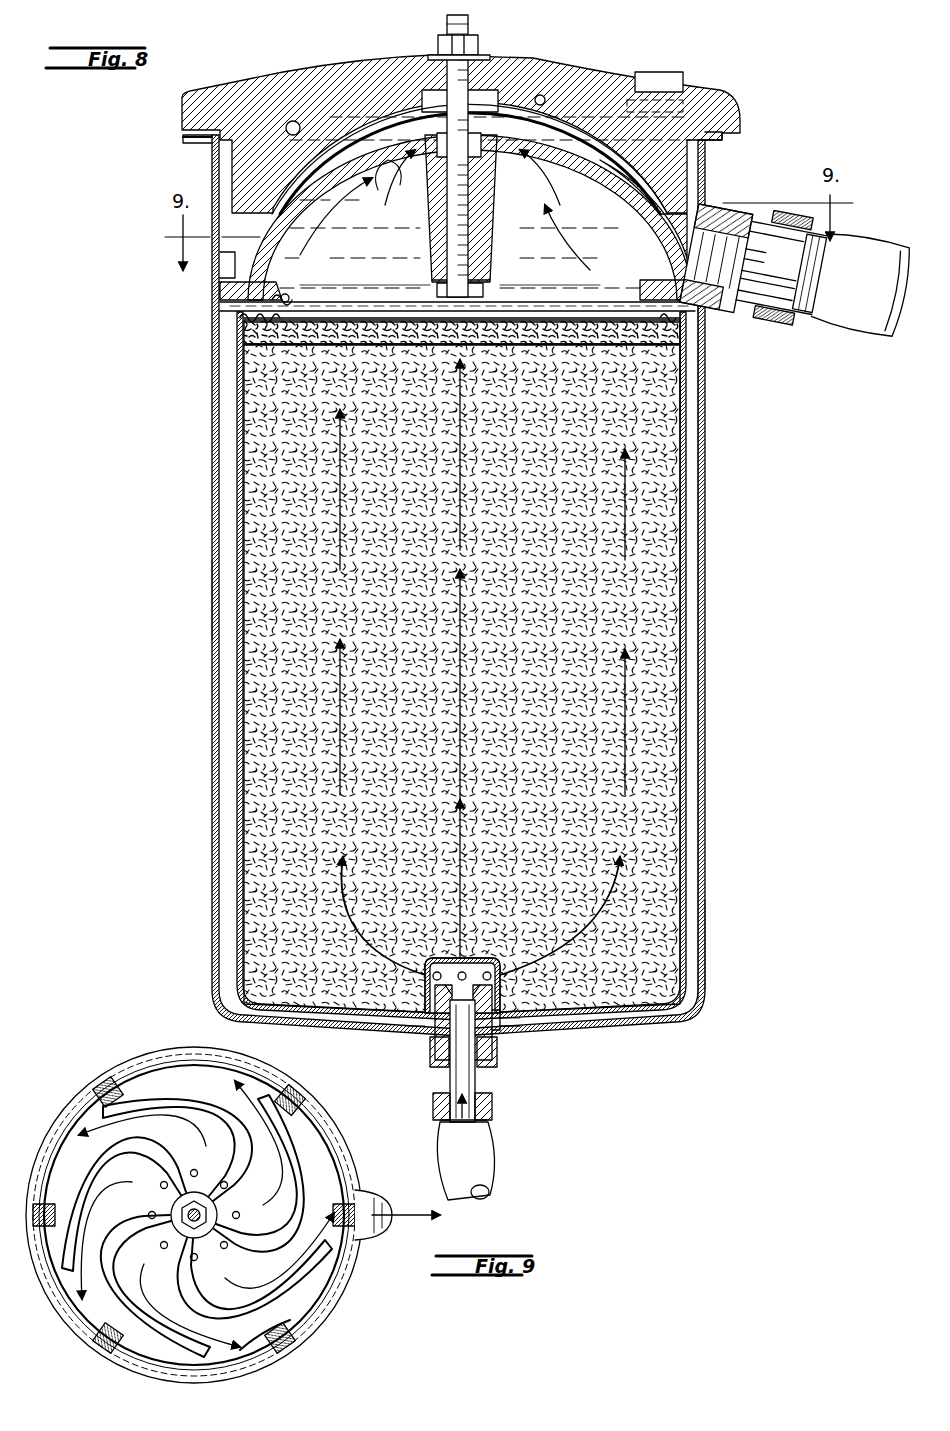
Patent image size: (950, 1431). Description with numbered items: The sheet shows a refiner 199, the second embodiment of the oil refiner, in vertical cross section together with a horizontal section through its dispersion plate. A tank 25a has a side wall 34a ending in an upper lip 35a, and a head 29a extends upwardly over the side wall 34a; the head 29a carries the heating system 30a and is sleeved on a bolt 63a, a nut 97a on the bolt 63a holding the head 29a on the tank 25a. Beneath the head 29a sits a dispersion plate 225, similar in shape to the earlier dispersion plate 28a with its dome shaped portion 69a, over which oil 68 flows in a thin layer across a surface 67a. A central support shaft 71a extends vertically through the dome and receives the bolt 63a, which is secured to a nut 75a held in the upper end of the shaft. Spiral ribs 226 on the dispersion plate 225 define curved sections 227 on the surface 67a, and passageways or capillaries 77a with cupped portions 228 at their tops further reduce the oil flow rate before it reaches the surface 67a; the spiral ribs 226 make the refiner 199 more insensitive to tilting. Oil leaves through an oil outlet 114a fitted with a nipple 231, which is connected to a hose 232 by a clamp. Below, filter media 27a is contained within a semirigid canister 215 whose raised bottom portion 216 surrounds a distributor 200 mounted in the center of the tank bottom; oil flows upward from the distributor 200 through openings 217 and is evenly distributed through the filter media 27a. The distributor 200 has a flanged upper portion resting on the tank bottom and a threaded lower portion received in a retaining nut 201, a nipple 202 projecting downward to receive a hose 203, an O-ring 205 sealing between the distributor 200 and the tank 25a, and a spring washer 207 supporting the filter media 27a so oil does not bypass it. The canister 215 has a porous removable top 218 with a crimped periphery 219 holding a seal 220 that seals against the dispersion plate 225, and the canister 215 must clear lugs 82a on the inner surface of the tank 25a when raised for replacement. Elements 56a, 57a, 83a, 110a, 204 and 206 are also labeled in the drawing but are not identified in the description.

In FIG. 8, the tank 25a is at (706, 660).
In FIG. 8, the filter media 27a is at (681, 528).
In FIG. 8, the dispersion plate 28a is at (588, 198).
In FIG. 8, the tank head 29a is at (300, 90).
In FIG. 8, the heating system 30a is at (663, 88).
In FIG. 8, the tank side wall 34a is at (706, 468).
In FIG. 9, the tank side wall 34a is at (349, 1156).
In FIG. 8, the upper lip 35a is at (200, 146).
In FIG. 8, the filter basket 56a is at (683, 604).
In FIG. 8, the basket wall 57a is at (686, 362).
In FIG. 8, the bolt 63a is at (447, 26).
In FIG. 8, the dispersion surface 67a is at (640, 212).
In FIG. 9, the dispersion surface 67a is at (288, 1350).
In FIG. 8, the oil 68 is at (588, 293).
In FIG. 8, the dome shaped portion 69a is at (350, 210).
In FIG. 8, the central support shaft 71a is at (492, 252).
In FIG. 9, the nut 75a is at (171, 1226).
In FIG. 8, the passageways or capillaries 77a is at (403, 195).
In FIG. 9, the passageways or capillaries 77a is at (226, 1174).
In FIG. 8, the lugs 82a is at (222, 272).
In FIG. 9, the lugs 82a is at (302, 1110).
In FIG. 9, the housing rim 83a is at (236, 1070).
In FIG. 8, the nut 97a is at (482, 52).
In FIG. 8, the cover vent hole 110a is at (540, 95).
In FIG. 8, the oil outlet 114a is at (742, 175).
In FIG. 9, the oil outlet 114a is at (364, 1204).
In FIG. 8, the refiner 199 is at (212, 600).
In FIG. 8, the distributor 200 is at (497, 1040).
In FIG. 8, the retaining nut 201 is at (437, 1066).
In FIG. 8, the nipple 202 is at (490, 1112).
In FIG. 8, the hose 203 is at (492, 1165).
In FIG. 8, the inlet pipe 204 is at (477, 1086).
In FIG. 8, the O-ring 205 is at (512, 1034).
In FIG. 8, the inlet fitting 206 is at (440, 1046).
In FIG. 8, the spring washer 207 is at (402, 1030).
In FIG. 8, the canister 215 is at (706, 915).
In FIG. 8, the raised bottom portion 216 is at (492, 958).
In FIG. 8, the openings 217 is at (463, 972).
In FIG. 8, the canister top 218 is at (385, 345).
In FIG. 8, the crimped periphery 219 is at (333, 360).
In FIG. 8, the seal 220 is at (288, 297).
In FIG. 8, the dispersion plate 225 is at (590, 247).
In FIG. 9, the dispersion plate 225 is at (318, 1300).
In FIG. 9, the ribs 226 is at (150, 1145).
In FIG. 9, the curved sections 227 is at (295, 1268).
In FIG. 8, the cupped portions 228 is at (382, 190).
In FIG. 8, the nipple 231 is at (792, 327).
In FIG. 8, the hose 232 is at (748, 322).